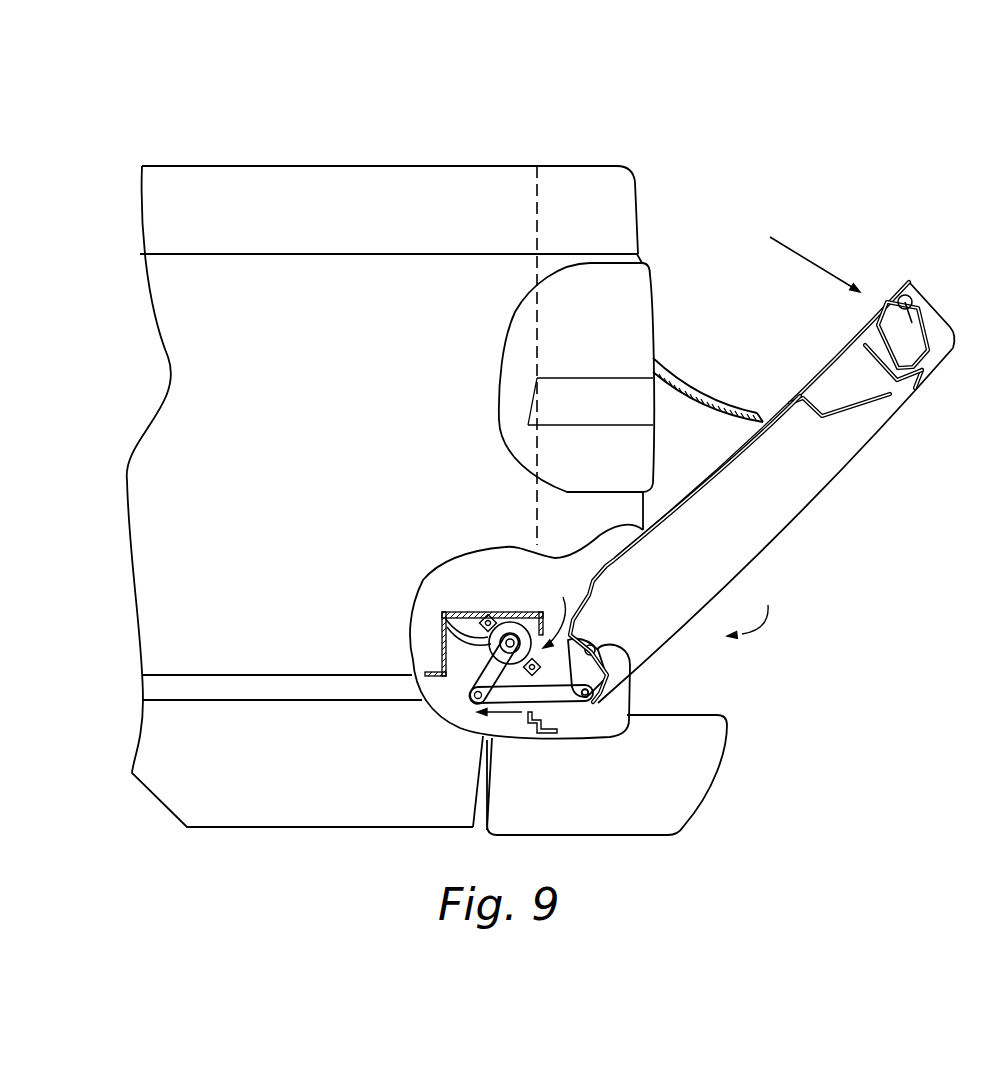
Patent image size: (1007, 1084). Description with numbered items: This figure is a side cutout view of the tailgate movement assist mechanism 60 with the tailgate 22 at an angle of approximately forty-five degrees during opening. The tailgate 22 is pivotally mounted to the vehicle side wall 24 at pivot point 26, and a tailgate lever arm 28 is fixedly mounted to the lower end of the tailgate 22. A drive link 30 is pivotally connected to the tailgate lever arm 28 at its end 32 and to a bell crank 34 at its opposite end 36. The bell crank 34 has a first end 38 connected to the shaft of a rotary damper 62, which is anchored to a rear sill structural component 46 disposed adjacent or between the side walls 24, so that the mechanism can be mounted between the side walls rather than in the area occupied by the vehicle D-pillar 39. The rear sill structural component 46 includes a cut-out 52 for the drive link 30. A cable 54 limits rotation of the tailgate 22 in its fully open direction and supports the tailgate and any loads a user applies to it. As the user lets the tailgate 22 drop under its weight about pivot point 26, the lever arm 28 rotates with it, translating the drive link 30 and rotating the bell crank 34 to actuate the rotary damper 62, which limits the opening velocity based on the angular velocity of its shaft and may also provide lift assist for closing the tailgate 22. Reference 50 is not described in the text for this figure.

The tailgate 22 is at (800, 520).
The vehicle side wall 24 is at (297, 462).
The pivot point 26 is at (587, 670).
The tailgate lever arm 28 is at (640, 648).
The drive link 30 is at (535, 697).
The end 32 is at (540, 698).
The bell crank 34 is at (480, 648).
The opposite end 36 is at (482, 700).
The first end 38 is at (516, 622).
The vehicle D-pillar 39 is at (535, 195).
The rear sill structural component 46 is at (473, 610).
The spring 50 is at (445, 618).
The cut-out 52 is at (553, 610).
The cable 54 is at (710, 393).
The tailgate movement assist mechanism 60 is at (754, 609).
The rotary damper 62 is at (490, 665).